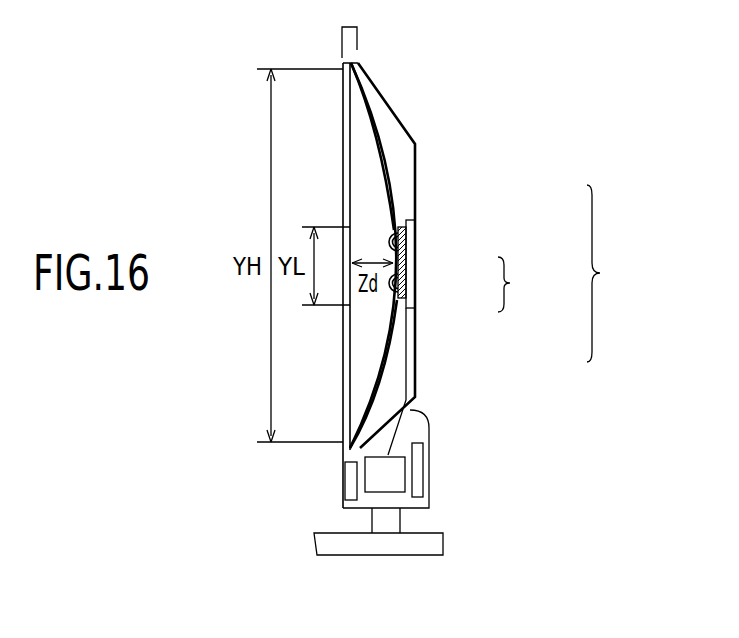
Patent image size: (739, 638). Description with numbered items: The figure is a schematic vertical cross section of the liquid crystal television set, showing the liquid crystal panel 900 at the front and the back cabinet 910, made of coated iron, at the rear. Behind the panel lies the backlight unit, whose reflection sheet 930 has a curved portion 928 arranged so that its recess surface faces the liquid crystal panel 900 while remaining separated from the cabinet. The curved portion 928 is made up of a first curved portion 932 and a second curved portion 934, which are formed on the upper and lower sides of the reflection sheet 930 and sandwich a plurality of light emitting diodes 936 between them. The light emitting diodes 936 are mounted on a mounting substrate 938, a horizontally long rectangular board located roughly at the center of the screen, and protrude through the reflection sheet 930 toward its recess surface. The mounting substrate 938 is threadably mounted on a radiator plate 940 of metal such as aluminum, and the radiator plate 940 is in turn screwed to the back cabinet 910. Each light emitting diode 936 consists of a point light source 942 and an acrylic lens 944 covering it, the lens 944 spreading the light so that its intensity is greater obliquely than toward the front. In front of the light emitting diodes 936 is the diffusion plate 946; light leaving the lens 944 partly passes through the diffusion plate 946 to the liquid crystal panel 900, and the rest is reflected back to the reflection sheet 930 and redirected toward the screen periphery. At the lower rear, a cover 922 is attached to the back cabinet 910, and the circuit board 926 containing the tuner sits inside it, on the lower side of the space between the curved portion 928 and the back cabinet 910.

The liquid crystal panel 900 is at (342, 112).
The diffusion plate 946 is at (350, 142).
The reflection sheet 930 is at (388, 164).
The first curved portion 932 is at (389, 178).
The second curved portion 934 is at (417, 372).
The curved portion 928 is at (499, 255).
The back cabinet 910 is at (417, 340).
The radiator plate 940 is at (416, 232).
The mounting substrate 938 is at (406, 253).
The lens 944 is at (398, 279).
The point light source 942 is at (400, 290).
The light emitting diodes 936 is at (474, 273).
The cover 922 is at (432, 462).
The circuit board 926 is at (365, 503).